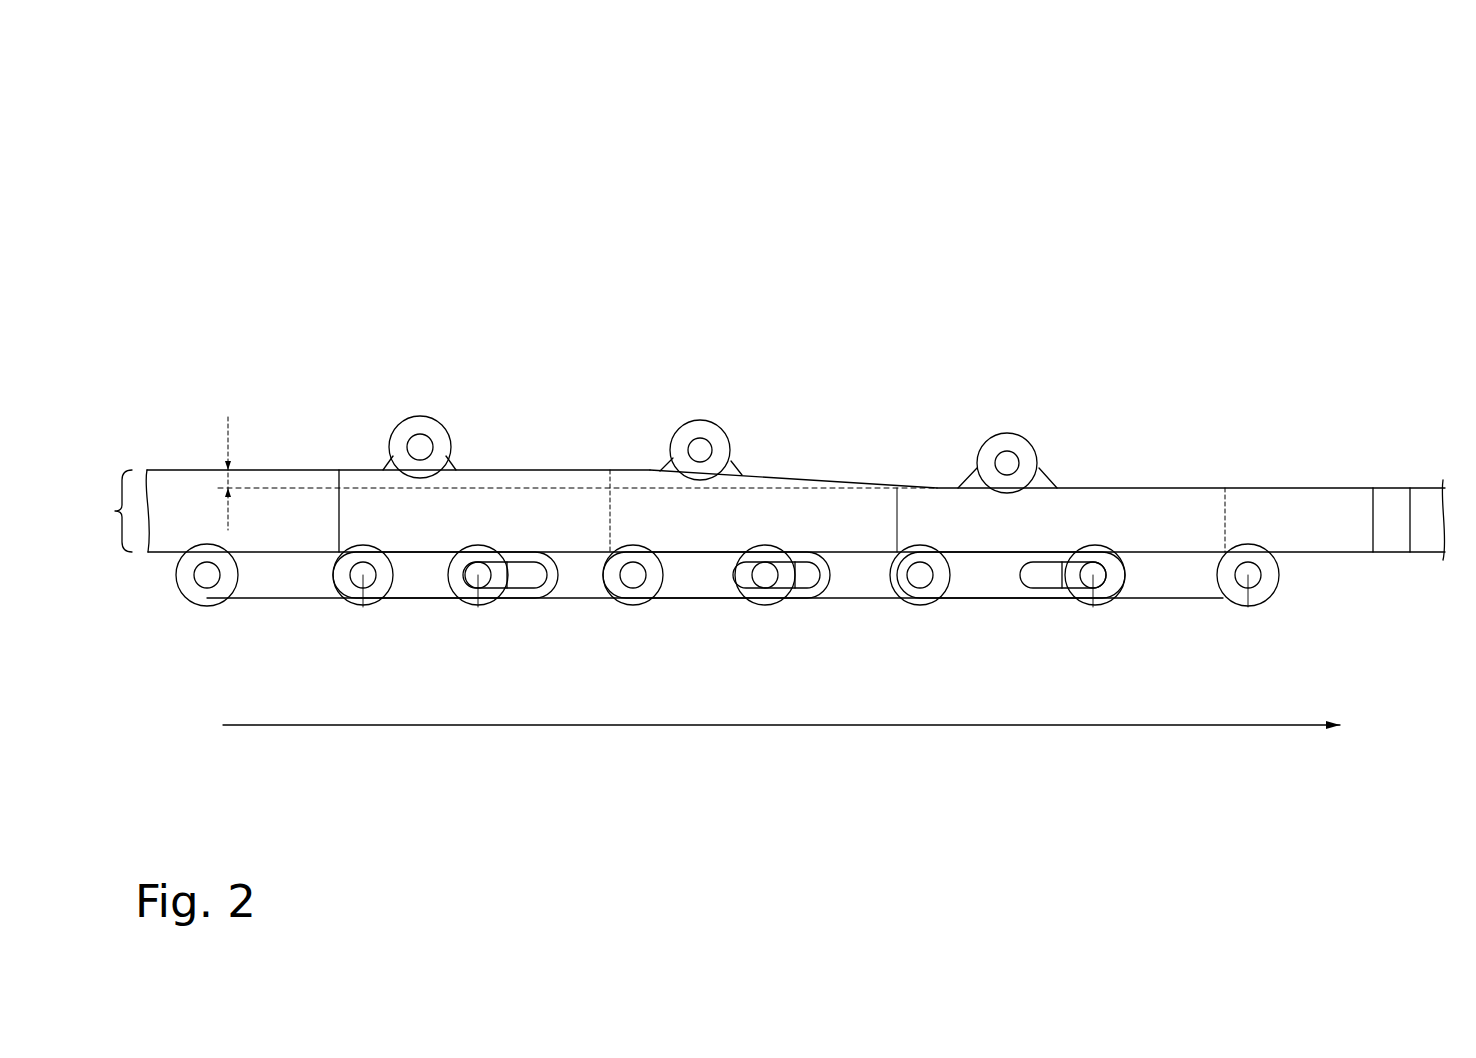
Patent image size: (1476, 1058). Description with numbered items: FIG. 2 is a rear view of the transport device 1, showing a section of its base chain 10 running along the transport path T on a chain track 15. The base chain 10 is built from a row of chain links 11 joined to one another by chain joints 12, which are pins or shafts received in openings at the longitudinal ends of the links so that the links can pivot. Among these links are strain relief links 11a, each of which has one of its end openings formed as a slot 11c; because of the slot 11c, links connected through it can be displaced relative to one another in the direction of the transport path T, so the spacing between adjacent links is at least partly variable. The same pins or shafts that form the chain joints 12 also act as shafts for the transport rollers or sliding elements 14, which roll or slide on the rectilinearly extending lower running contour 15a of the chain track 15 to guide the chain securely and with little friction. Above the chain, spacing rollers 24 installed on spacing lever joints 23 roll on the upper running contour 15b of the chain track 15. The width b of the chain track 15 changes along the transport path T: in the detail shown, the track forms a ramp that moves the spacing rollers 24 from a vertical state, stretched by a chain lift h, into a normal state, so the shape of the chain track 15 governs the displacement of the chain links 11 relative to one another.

The transport device 1 is at (1293, 248).
The base chain 10 is at (1283, 610).
The chain links 11 is at (277, 585).
The strain relief link 11a is at (692, 577).
The slot 11c is at (1047, 580).
The chain joints 12 is at (763, 577).
The transport rollers or sliding elements 14 is at (492, 600).
The chain track 15 is at (1163, 510).
The lower running contour 15a is at (1358, 552).
The upper running contour 15b is at (1370, 488).
The spacing lever joint 23 is at (697, 450).
The spacing roller 24 is at (1023, 447).
The chain lift h is at (229, 455).
The width of the chain track b is at (110, 511).
The transport path T is at (781, 748).